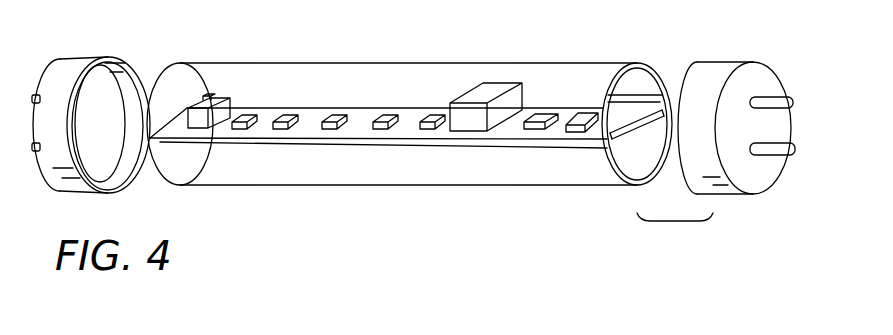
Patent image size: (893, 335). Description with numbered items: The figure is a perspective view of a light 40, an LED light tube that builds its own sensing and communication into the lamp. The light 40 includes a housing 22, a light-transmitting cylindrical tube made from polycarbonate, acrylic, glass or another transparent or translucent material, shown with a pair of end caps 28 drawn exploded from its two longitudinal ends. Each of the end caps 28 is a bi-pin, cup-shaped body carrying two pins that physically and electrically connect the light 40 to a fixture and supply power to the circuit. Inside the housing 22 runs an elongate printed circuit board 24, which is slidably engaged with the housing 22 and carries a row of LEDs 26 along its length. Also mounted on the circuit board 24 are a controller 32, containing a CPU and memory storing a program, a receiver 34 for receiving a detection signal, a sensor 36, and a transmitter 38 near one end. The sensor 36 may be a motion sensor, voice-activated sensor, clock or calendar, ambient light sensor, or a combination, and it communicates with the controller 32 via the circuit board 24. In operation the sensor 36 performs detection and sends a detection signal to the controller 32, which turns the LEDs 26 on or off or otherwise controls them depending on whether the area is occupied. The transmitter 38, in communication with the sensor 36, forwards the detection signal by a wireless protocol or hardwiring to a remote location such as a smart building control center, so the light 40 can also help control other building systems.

The housing 22 is at (298, 68).
The circuit board 24 is at (363, 132).
The LEDs 26 is at (330, 123).
The end caps 28 is at (86, 62).
The controller 32 is at (467, 128).
The receiver 34 is at (528, 130).
The sensor 36 is at (210, 94).
The transmitter 38 is at (566, 133).
The light 40 is at (423, 48).